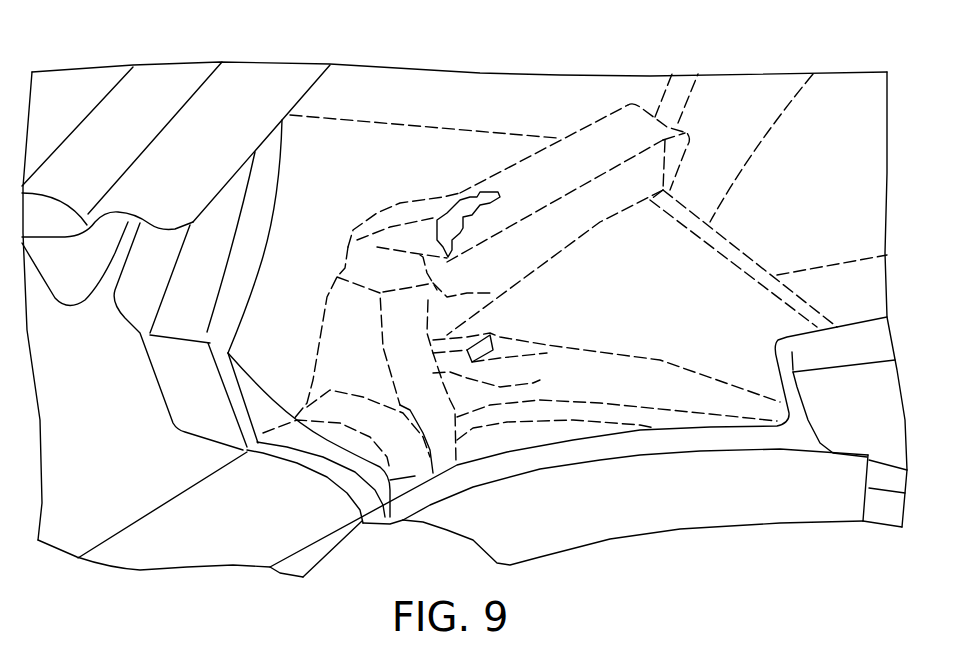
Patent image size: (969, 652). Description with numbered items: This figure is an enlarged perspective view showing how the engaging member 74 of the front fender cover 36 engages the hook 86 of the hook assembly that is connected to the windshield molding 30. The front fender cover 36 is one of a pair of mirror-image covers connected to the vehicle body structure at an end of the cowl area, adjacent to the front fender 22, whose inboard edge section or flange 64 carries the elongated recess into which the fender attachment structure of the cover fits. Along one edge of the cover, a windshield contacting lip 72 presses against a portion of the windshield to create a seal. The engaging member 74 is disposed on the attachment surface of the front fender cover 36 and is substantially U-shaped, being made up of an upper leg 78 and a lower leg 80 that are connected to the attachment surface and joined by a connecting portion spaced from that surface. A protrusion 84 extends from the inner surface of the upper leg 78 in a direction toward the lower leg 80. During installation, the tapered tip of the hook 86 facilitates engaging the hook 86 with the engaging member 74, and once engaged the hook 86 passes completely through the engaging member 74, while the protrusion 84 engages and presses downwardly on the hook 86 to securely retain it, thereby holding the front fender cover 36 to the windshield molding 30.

The front fender 22 is at (150, 97).
The inboard edge section or flange 64 is at (250, 98).
The windshield molding 30 is at (163, 490).
The front fender cover 36 is at (682, 536).
The windshield contacting lip 72 is at (540, 525).
The hook 86 is at (585, 125).
The engaging member 74 is at (338, 241).
The upper leg 78 is at (410, 220).
The protrusion 84 is at (493, 293).
The lower leg 80 is at (540, 380).